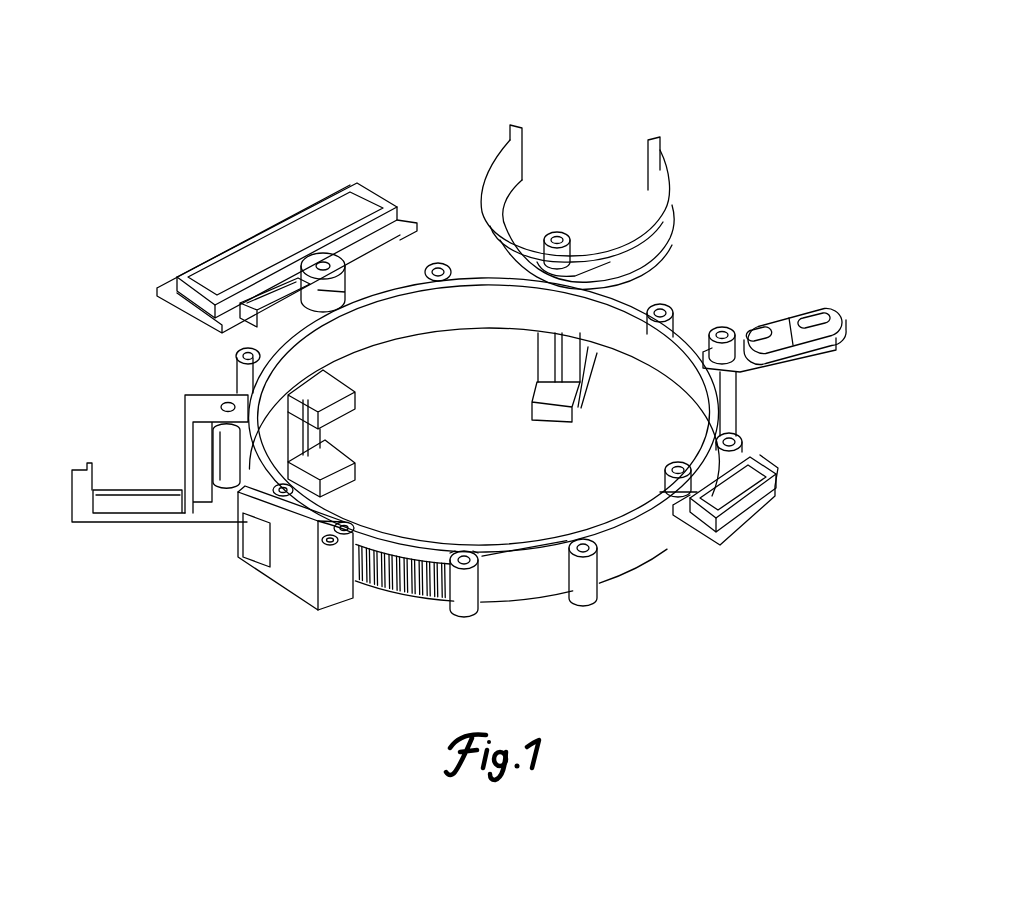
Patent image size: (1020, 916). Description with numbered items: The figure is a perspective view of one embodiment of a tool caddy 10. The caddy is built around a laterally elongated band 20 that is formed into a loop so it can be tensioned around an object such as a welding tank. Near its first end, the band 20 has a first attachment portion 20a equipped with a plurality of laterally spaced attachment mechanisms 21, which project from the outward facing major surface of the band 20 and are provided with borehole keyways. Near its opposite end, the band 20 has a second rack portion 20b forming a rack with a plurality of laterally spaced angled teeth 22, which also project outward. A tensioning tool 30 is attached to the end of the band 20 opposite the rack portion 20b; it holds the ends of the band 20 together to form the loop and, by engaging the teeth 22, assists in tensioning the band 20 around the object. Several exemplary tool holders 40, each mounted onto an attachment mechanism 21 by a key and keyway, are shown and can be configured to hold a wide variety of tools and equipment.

The tool caddy 10 is at (316, 70).
The band 20 is at (403, 325).
The first attachment portion of band 20a is at (527, 583).
The second rack portion of band 20b is at (387, 587).
The attachment mechanism 21 is at (668, 305).
The teeth on rack portion of band 22 is at (416, 586).
The tensioning tool 30 is at (285, 567).
The tool holder 40 is at (250, 238).